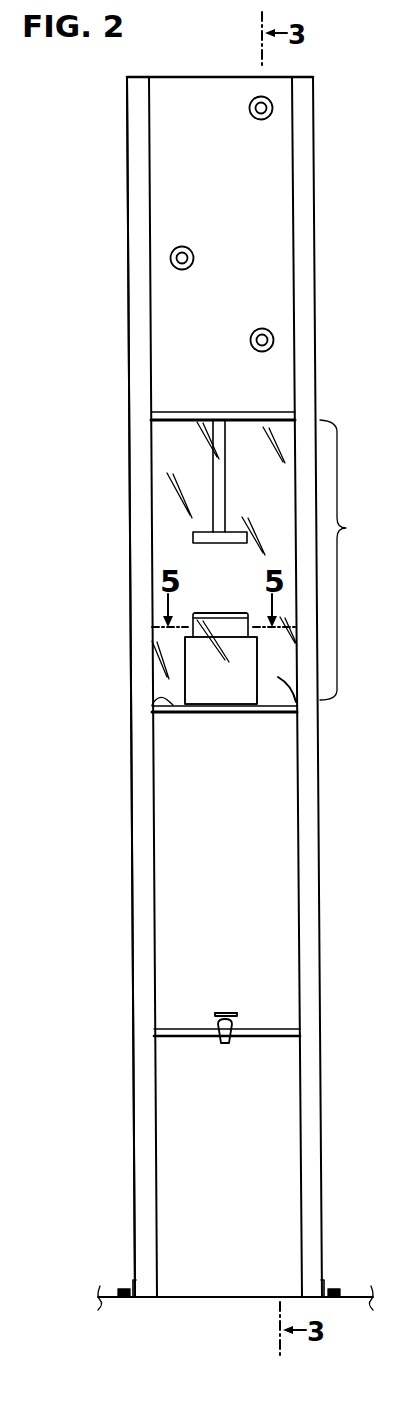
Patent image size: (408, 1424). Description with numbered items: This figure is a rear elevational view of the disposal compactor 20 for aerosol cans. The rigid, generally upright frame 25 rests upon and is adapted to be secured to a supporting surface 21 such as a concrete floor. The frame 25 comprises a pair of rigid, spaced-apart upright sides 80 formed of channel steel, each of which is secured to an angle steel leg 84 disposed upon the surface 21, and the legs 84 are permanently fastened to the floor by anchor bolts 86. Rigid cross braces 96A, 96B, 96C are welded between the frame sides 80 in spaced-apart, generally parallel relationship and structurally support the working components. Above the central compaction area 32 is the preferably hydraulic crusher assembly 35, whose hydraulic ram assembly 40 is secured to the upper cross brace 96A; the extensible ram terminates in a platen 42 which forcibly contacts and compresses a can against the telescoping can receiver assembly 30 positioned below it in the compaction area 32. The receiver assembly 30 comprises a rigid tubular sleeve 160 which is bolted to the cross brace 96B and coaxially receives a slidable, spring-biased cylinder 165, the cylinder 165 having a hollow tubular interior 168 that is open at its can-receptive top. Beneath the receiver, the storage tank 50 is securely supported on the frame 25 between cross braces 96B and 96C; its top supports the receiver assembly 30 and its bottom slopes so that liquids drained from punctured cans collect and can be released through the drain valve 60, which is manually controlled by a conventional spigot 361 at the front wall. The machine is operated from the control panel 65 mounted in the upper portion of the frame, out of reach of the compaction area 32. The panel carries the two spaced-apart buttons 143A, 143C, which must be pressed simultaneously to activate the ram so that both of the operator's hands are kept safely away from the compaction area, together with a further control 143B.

The disposal compactor 20 is at (86, 99).
The supporting surface 21 is at (228, 1287).
The frame 25 is at (118, 776).
The telescoping can receiver assembly 30 is at (212, 677).
The compaction area 32 is at (350, 560).
The crusher assembly 35 is at (95, 324).
The hydraulic ram assembly 40 is at (213, 468).
The platen 42 is at (200, 532).
The storage tank 50 is at (250, 887).
The drain valve 60 is at (220, 1040).
The control panel 65 is at (239, 146).
The upright sides 80 is at (140, 818).
The legs 84 is at (132, 1283).
The anchor bolts 86 is at (122, 1289).
The cross brace 96A is at (165, 419).
The cross brace 96B is at (176, 706).
The cross brace 96C is at (273, 1033).
The button 143A is at (174, 256).
The mounting hole 143B is at (273, 108).
The button 143C is at (273, 340).
The tubular sleeve 160 is at (195, 660).
The slidable cylinder 165 is at (165, 627).
The hollow tubular interior 168 is at (207, 603).
The spigot 361 is at (216, 1012).